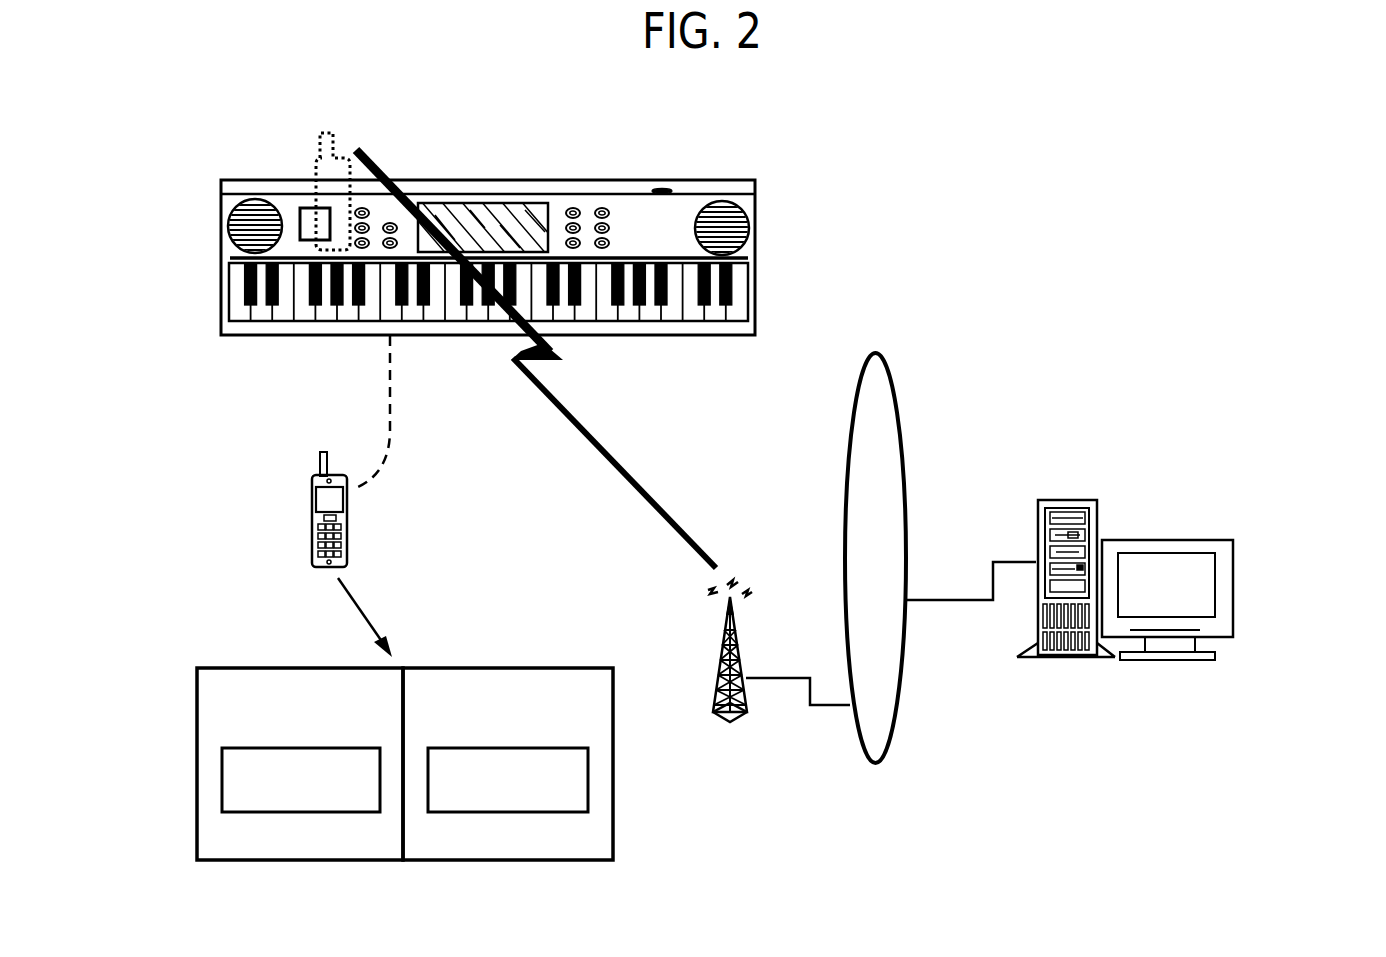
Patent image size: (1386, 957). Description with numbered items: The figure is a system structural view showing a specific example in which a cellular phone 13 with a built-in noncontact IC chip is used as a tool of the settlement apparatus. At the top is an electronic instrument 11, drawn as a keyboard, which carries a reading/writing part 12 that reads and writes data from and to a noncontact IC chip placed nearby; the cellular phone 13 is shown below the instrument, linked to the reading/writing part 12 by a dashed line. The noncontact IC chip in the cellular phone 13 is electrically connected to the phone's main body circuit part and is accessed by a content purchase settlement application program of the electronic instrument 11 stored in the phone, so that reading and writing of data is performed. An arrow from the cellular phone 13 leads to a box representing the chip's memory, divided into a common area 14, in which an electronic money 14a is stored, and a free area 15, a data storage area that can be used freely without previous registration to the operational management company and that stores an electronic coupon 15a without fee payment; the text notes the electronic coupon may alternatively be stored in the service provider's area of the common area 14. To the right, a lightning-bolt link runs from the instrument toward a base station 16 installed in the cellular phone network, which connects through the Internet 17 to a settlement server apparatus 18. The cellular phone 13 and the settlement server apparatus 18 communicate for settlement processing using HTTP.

The electronic instrument 11 is at (255, 336).
The reading/writing part 12 is at (310, 207).
The cellular phone with built-in noncontact IC chip 13 is at (348, 508).
The common area 14 is at (307, 796).
The electronic money 14a is at (255, 748).
The free area 15 is at (508, 796).
The electronic coupon 15a is at (464, 748).
The base station 16 is at (725, 721).
The Internet 17 is at (902, 416).
The settlement server apparatus 18 is at (1058, 657).